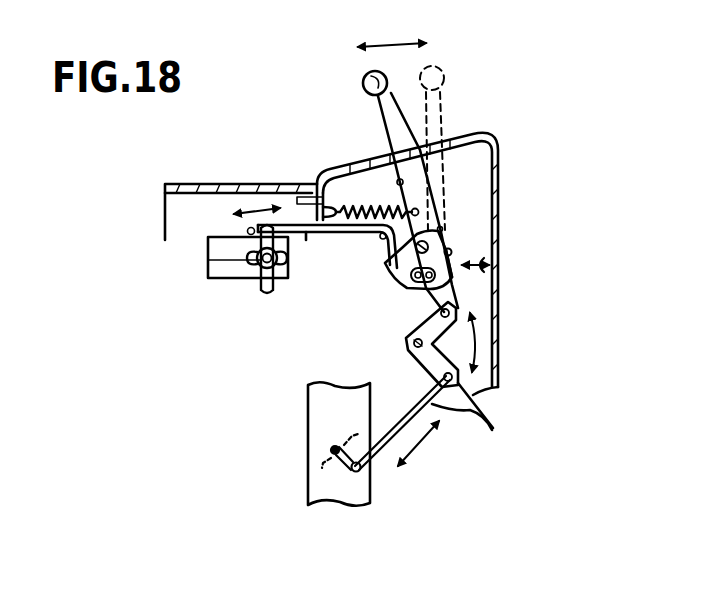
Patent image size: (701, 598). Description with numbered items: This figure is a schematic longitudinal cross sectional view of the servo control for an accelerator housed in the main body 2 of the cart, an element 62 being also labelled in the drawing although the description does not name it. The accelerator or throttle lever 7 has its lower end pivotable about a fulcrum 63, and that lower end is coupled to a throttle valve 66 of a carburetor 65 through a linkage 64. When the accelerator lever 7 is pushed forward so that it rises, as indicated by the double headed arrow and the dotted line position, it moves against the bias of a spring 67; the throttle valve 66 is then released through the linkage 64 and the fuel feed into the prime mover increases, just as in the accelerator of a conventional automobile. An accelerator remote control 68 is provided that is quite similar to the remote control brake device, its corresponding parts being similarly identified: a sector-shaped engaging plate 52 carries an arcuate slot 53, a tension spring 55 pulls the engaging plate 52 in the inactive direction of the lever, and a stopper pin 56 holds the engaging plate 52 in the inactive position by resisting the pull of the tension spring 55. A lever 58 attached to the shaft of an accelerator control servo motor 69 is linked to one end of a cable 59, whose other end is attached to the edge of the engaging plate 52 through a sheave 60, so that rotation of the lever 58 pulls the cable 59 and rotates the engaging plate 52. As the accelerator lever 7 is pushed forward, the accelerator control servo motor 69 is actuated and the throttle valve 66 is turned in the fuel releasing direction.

The main body 2 is at (190, 184).
The accelerator lever 7 is at (362, 85).
The engaging plate 52 is at (457, 284).
The arcuate slot 53 is at (400, 284).
The tension spring 55 is at (461, 262).
The stopper pin 56 is at (450, 251).
The lever 58 is at (266, 289).
The cable 59 is at (307, 240).
The sheave 60 is at (381, 239).
The plate 62 is at (264, 170).
The fulcrum 63 is at (441, 228).
The linkage 64 is at (433, 386).
The carburetor 65 is at (300, 458).
The throttle valve 66 is at (336, 456).
The spring 67 is at (361, 206).
The accelerator remote control 68 is at (222, 292).
The accelerator control servo motor 69 is at (222, 251).